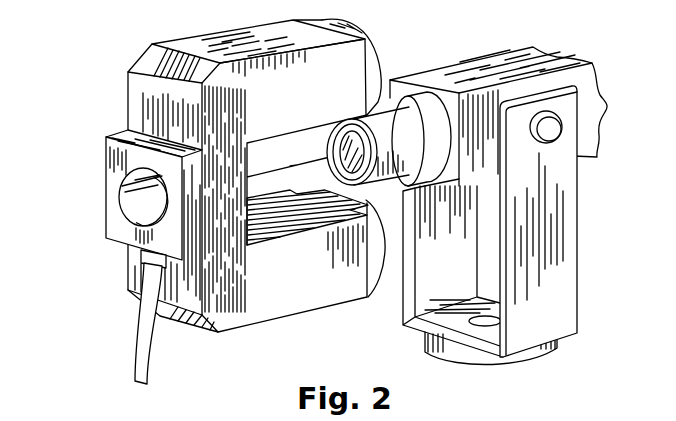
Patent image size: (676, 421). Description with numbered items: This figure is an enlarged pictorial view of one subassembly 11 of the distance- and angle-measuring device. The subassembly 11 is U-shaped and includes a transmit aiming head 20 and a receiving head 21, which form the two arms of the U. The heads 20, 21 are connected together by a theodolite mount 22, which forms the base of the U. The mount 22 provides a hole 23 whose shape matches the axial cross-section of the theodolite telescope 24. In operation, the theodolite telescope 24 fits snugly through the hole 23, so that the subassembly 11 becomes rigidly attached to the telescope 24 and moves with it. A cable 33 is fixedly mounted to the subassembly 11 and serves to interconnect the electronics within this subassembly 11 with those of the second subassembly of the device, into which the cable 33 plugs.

The subassembly 11 is at (226, 339).
The transmit aiming head 20 is at (240, 38).
The receiving head 21 is at (317, 297).
The theodolite mount 22 is at (123, 130).
The hole 23 is at (132, 197).
The theodolite telescope 24 is at (418, 107).
The cable 33 is at (147, 335).